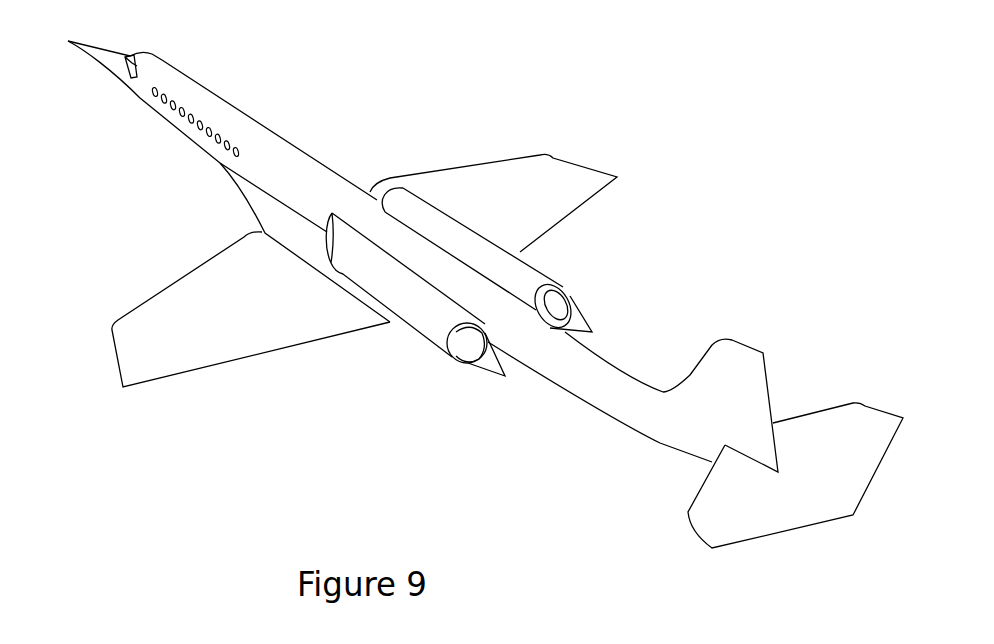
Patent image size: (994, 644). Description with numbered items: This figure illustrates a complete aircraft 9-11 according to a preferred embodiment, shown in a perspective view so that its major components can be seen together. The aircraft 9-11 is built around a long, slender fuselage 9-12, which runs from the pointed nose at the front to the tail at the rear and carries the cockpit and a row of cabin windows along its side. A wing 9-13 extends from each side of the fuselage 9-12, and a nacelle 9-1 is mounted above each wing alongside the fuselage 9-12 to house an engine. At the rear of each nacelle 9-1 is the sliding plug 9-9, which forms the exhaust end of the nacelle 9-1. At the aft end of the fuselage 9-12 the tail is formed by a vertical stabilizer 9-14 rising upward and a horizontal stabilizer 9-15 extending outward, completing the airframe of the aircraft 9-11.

The nacelle 9-1 is at (420, 325).
The sliding plug 9-9 is at (477, 368).
The aircraft 9-11 is at (243, 127).
The fuselage 9-12 is at (137, 108).
The wing 9-13 is at (197, 268).
The vertical stabilizer 9-14 is at (735, 340).
The horizontal stabilizer 9-15 is at (850, 403).